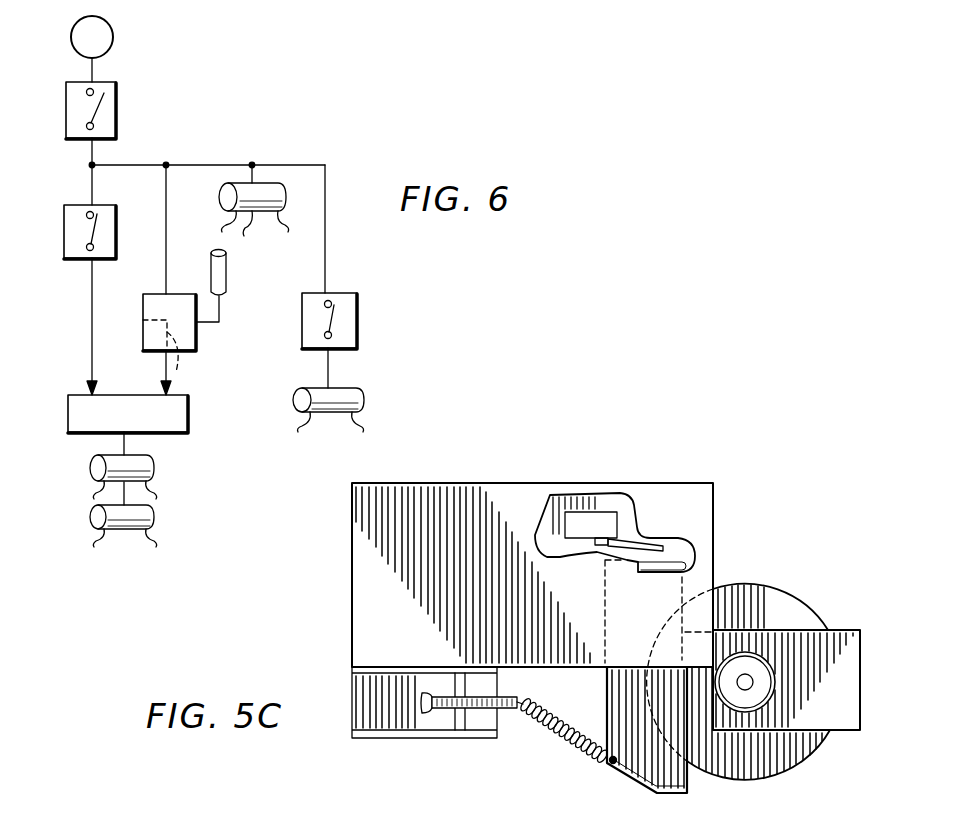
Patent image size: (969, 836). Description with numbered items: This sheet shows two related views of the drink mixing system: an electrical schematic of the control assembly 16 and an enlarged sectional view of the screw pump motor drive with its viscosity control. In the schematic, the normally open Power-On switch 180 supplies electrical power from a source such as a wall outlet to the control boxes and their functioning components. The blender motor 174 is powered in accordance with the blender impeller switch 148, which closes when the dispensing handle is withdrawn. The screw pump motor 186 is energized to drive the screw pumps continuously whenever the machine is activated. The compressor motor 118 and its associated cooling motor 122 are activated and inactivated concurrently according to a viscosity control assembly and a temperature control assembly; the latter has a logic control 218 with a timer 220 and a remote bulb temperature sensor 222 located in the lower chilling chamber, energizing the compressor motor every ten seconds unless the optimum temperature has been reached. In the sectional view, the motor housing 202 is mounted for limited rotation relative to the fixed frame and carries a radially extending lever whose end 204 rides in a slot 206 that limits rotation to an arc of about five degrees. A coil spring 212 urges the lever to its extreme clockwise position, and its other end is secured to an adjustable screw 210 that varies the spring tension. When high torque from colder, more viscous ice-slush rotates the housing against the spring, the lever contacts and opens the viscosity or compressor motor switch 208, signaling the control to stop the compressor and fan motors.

In FIG. 6, the control assembly 16 is at (68, 417).
In FIG. 6, the compressor motor 118 is at (154, 470).
In FIG. 6, the cooling motor 122 is at (154, 519).
In FIG. 6, the blender impeller switch 148 is at (358, 320).
In FIG. 6, the blender motor 174 is at (364, 400).
In FIG. 6, the Power-On switch 180 is at (118, 118).
In FIG. 6, the screw pump motor 186 is at (254, 219).
In FIG. 5C, the motor housing 202 is at (792, 607).
In FIG. 5C, the end of the lever 204 is at (696, 556).
In FIG. 5C, the slot 206 is at (682, 538).
In FIG. 6, the viscosity or compressor motor switch 208 is at (64, 228).
In FIG. 5C, the viscosity or compressor motor switch 208 is at (597, 520).
In FIG. 5C, the screw 210 is at (448, 709).
In FIG. 5C, the coil spring 212 is at (537, 716).
In FIG. 6, the logic control 218 is at (197, 340).
In FIG. 6, the timer 220 is at (195, 358).
In FIG. 6, the remote bulb temperature sensor 222 is at (226, 281).